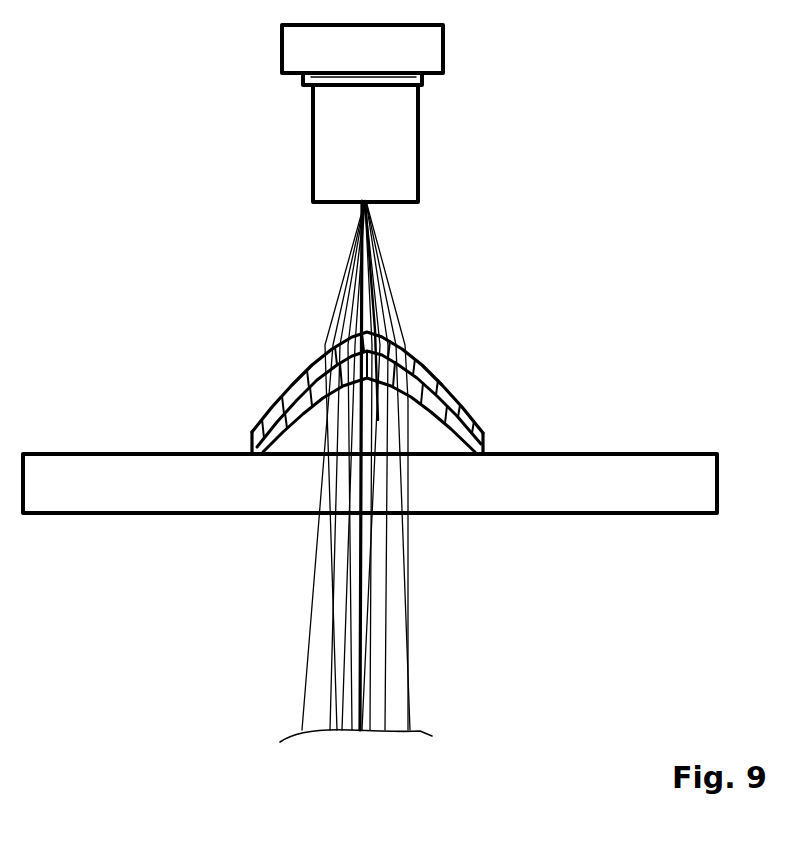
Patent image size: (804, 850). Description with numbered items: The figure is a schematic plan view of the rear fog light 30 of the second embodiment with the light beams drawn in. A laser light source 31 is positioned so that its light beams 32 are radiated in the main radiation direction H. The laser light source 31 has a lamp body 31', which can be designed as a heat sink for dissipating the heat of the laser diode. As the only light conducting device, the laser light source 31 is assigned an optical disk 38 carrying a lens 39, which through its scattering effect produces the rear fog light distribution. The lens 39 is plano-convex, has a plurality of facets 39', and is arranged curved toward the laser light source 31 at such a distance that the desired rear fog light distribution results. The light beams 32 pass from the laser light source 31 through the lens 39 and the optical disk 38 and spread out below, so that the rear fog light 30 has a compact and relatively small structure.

The rear fog light 30 is at (370, 383).
The laser light source 31 is at (423, 113).
The lamp body 31' is at (402, 143).
The light beams 32 is at (392, 682).
The optical disk 38 is at (622, 476).
The lens 39 is at (414, 388).
The facets 39' is at (367, 385).
The main radiation direction H is at (204, 652).